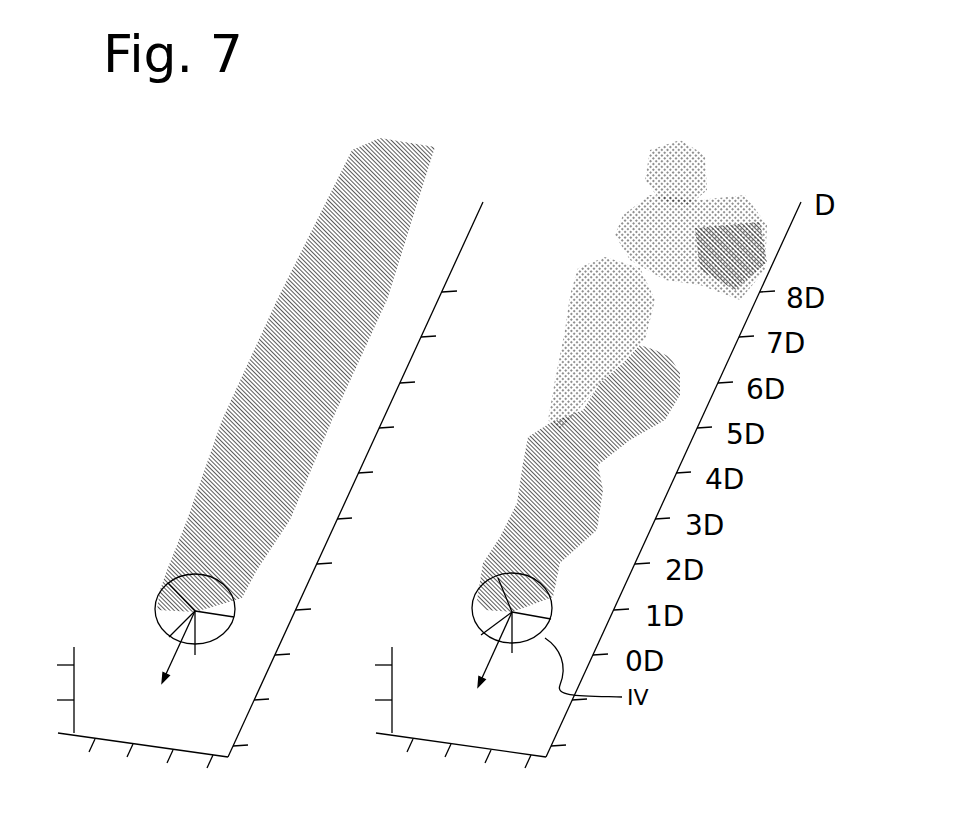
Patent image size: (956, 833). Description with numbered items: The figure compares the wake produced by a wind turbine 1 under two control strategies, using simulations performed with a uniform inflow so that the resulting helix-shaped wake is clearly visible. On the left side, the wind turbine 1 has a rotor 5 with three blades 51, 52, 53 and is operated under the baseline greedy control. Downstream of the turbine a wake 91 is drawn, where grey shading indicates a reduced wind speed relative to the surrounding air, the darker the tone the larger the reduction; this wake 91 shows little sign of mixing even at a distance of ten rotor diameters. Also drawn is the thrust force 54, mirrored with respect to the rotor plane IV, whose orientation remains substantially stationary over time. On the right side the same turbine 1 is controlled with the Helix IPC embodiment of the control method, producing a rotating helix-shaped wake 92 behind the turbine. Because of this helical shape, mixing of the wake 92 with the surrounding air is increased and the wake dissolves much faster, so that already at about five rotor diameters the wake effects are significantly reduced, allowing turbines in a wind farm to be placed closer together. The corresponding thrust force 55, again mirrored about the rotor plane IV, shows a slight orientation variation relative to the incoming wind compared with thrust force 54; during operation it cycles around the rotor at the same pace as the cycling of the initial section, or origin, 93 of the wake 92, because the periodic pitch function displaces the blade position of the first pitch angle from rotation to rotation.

The wind turbine 1 is at (112, 569).
The rotor 5 is at (240, 657).
The blade 51 is at (221, 612).
The blade 52 is at (172, 624).
The blade 53 is at (182, 586).
The thrust force 54 is at (175, 667).
The thrust force 55 is at (487, 670).
The wake 91 is at (271, 306).
The helix-shaped wake 92 is at (541, 414).
The initial section of the wake 93 is at (478, 608).